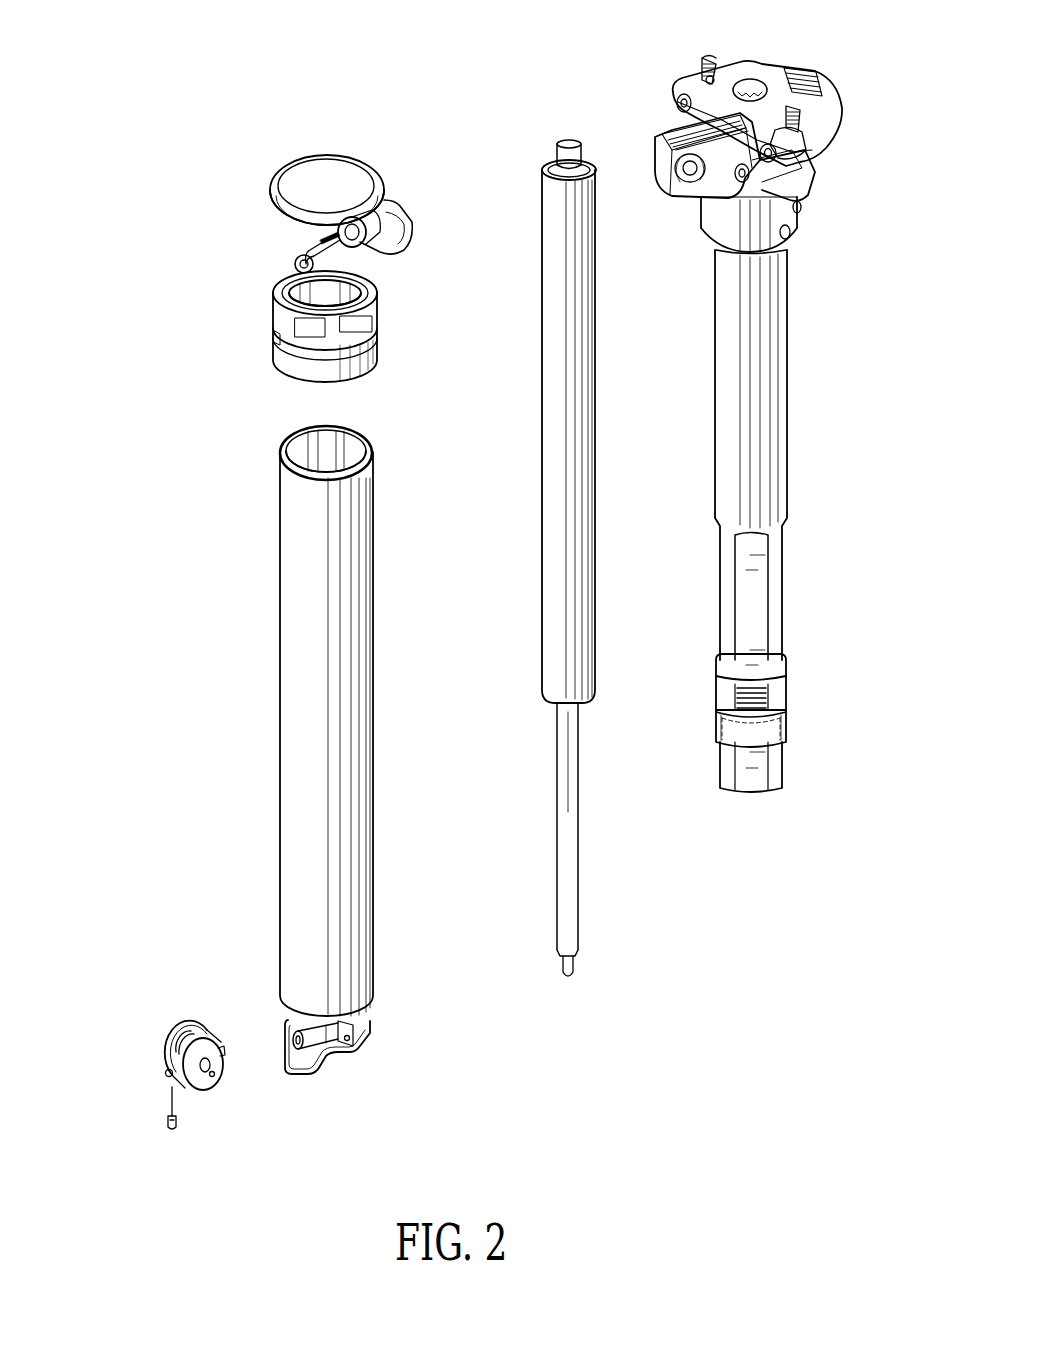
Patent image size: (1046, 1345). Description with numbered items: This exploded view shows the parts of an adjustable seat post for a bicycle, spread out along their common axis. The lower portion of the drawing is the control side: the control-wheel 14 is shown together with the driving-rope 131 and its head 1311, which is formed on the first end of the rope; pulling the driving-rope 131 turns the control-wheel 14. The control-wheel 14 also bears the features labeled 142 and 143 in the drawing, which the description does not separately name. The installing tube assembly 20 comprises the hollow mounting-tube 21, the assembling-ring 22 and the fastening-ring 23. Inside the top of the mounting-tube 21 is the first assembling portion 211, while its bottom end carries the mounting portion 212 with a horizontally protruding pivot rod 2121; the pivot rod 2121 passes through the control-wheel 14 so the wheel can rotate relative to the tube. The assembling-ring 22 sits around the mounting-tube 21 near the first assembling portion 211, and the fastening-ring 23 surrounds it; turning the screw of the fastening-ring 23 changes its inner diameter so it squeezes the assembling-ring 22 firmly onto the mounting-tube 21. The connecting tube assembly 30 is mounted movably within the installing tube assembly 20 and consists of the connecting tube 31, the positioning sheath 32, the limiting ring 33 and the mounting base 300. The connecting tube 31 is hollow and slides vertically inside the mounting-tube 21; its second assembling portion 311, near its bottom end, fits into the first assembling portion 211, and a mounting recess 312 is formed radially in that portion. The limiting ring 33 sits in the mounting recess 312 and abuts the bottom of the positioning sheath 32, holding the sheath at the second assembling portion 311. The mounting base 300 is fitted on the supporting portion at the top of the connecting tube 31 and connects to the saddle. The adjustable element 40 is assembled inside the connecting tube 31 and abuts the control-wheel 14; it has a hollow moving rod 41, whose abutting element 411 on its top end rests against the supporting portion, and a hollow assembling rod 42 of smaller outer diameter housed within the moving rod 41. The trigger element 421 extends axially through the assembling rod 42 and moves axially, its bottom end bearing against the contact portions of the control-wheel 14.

The control-wheel 14 is at (151, 1056).
The slot of bottom cap 142 is at (183, 1029).
The hole of bottom cap 143 is at (172, 1062).
The driving-rope 131 is at (174, 1106).
The head 1311 is at (167, 1128).
The installing tube assembly 20 is at (304, 762).
The mounting-tube 21 is at (312, 572).
The first assembling portion 211 is at (297, 456).
The mounting portion 212 is at (342, 1062).
The pivot rod 2121 is at (312, 1032).
The assembling-ring 22 is at (285, 358).
The fastening-ring 23 is at (290, 172).
The connecting tube assembly 30 is at (768, 423).
The mounting base 300 is at (774, 92).
The connecting tube 31 is at (766, 303).
The second assembling portion 311 is at (752, 606).
The positioning sheath 32 is at (776, 690).
The limiting ring 33 is at (777, 733).
The mounting recess 312 is at (745, 730).
The adjustable element 40 is at (534, 548).
The moving rod 41 is at (556, 311).
The abutting element 411 is at (566, 140).
The assembling rod 42 is at (568, 744).
The trigger element 421 is at (565, 973).